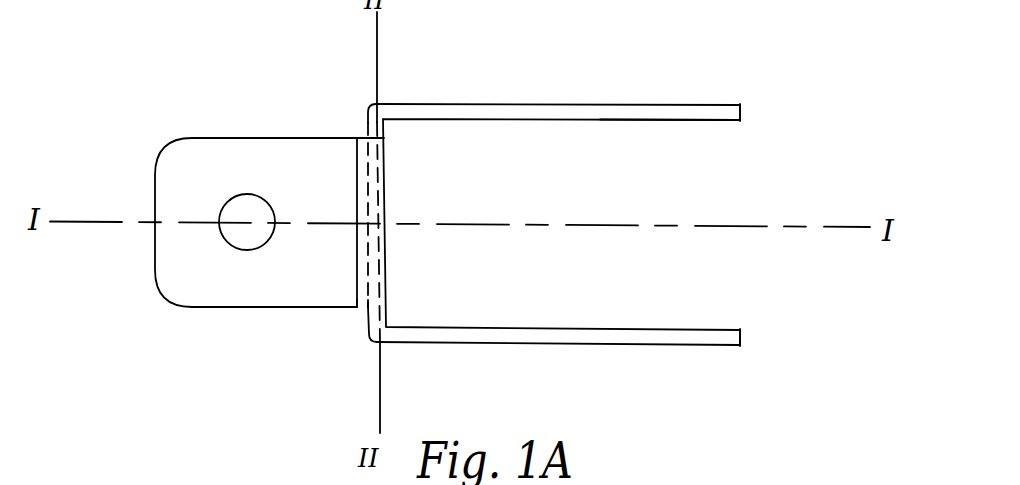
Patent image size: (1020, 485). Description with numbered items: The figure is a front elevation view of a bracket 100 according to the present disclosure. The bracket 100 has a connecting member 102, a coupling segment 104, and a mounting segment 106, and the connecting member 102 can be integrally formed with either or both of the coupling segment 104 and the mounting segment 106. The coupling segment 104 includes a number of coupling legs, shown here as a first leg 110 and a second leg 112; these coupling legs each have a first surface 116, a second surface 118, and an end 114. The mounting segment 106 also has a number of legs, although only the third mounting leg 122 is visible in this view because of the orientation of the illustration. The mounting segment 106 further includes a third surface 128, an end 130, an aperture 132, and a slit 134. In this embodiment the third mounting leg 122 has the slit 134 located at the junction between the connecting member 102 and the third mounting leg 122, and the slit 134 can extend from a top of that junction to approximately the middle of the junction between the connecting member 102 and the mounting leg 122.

The bracket 100 is at (793, 108).
The connecting member 102 is at (386, 287).
The coupling segment 104 is at (750, 51).
The mounting segment 106 is at (362, 51).
The first leg 110 is at (715, 347).
The second leg 112 is at (695, 121).
The end 114 is at (742, 123).
The first surface 116 is at (517, 121).
The second surface 118 is at (578, 103).
The third mounting leg 122 is at (260, 308).
The third surface 128 is at (330, 288).
The end 130 is at (147, 312).
The aperture 132 is at (267, 202).
The slit 134 is at (362, 311).